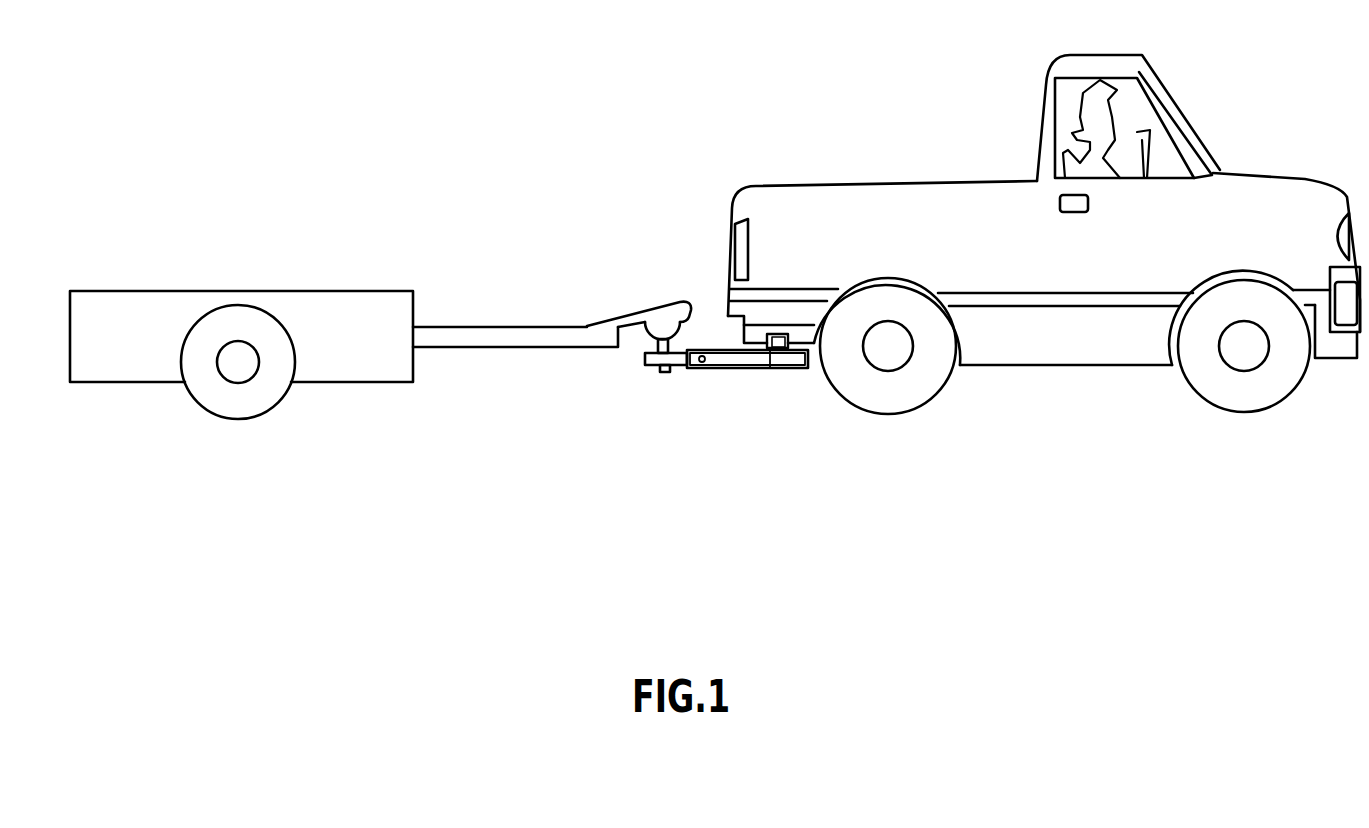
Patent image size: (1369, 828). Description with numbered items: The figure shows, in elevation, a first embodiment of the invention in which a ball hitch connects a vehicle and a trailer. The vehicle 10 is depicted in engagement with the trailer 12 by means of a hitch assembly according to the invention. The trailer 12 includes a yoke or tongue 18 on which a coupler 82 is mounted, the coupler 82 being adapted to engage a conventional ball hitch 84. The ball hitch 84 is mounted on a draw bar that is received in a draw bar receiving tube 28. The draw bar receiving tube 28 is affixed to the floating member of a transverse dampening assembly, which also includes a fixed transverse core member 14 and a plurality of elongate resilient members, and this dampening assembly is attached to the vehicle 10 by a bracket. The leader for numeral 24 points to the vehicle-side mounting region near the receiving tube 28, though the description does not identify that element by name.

The vehicle 10 is at (840, 184).
The trailer 12 is at (286, 290).
The fixed transverse core member 14 is at (772, 369).
The tongue 18 is at (528, 326).
The vehicle frame / hitch mount 24 is at (808, 355).
The draw bar receiving tube 28 is at (716, 369).
The coupler 82 is at (649, 307).
The ball hitch 84 is at (645, 340).